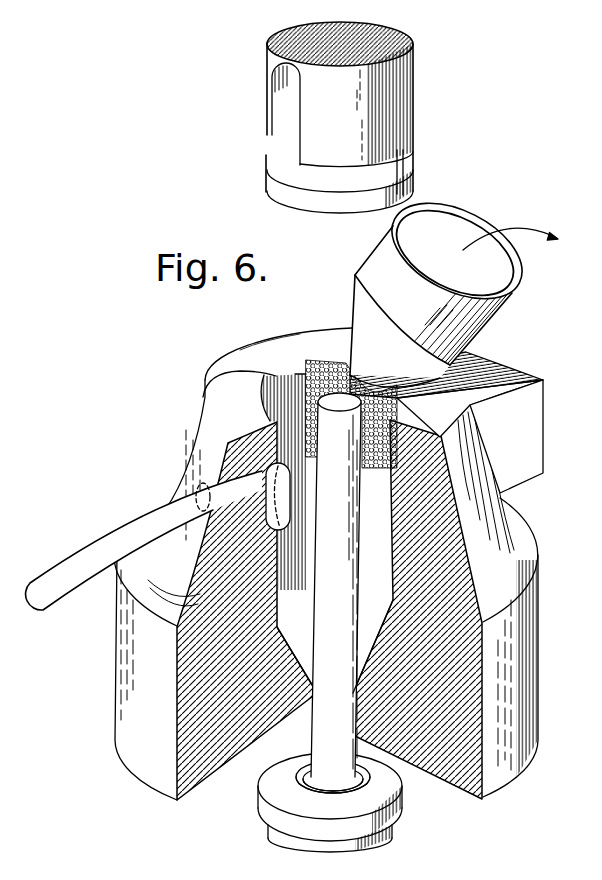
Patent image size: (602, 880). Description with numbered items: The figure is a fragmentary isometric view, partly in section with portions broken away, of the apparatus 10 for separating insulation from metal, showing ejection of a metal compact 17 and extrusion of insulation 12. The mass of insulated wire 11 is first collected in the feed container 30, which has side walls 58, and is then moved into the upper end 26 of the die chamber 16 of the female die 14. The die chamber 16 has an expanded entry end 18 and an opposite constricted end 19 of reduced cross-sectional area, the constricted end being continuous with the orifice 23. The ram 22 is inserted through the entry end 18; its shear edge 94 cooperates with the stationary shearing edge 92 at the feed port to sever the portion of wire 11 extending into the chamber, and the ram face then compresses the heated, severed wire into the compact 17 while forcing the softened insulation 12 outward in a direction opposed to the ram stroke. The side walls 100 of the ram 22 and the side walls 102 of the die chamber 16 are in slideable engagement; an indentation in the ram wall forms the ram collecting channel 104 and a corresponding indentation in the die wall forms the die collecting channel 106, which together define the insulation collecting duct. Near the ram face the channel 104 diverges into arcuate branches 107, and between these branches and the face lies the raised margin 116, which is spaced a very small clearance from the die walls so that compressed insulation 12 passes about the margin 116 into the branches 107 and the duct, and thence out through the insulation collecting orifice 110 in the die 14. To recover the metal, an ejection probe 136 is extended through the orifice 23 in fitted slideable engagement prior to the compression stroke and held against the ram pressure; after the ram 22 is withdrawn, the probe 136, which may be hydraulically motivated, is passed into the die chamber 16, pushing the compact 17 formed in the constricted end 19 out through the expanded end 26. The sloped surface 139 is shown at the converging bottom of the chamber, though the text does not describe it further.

The apparatus 10 is at (222, 350).
The mass of nonconducting material and metal 11 is at (300, 372).
The insulation 12 is at (83, 548).
The female die 14 is at (530, 664).
The die chamber 16 is at (385, 537).
The metal compact 17 is at (500, 322).
The entry end 18 is at (228, 476).
The constricted end 19 is at (358, 675).
The ram 22 is at (336, 117).
The orifice 23 is at (319, 708).
The upper end 26 is at (293, 387).
The feed container 30 is at (497, 367).
The side walls 58 is at (533, 417).
The stationary shearing edge 92 is at (375, 465).
The shear edge 94 is at (401, 184).
The side walls of the ram 100 is at (310, 133).
The side walls of the die chamber 102 is at (263, 390).
The ram collecting channel 104 is at (290, 157).
The die collecting channel 106 is at (269, 522).
The arcuate branches 107 is at (392, 172).
The insulation collecting orifice 110 is at (207, 487).
The raised margin 116 is at (277, 184).
The ejection probe 136 is at (362, 735).
The sloped bottom 139 is at (277, 647).